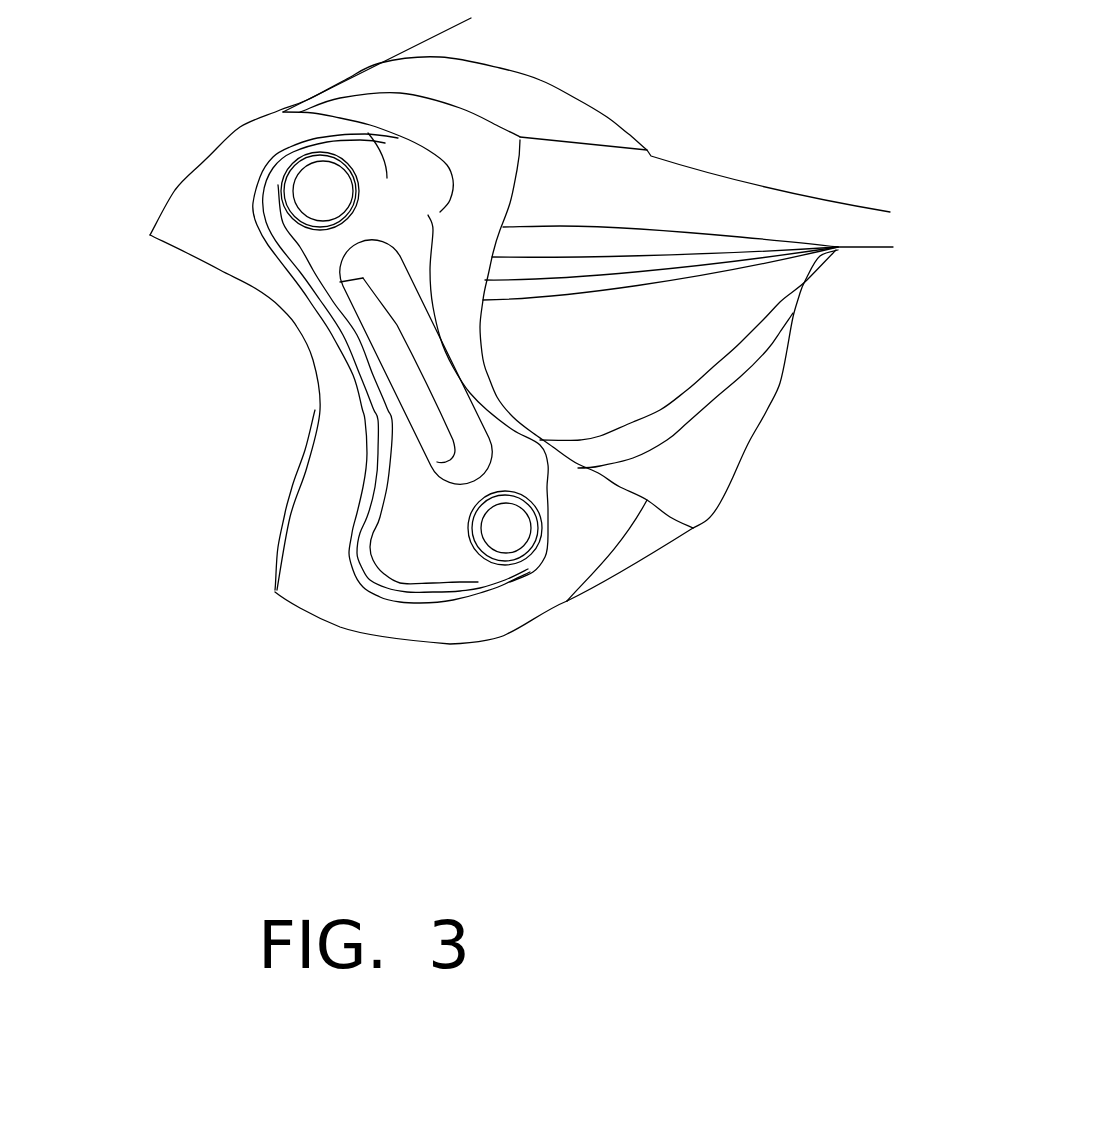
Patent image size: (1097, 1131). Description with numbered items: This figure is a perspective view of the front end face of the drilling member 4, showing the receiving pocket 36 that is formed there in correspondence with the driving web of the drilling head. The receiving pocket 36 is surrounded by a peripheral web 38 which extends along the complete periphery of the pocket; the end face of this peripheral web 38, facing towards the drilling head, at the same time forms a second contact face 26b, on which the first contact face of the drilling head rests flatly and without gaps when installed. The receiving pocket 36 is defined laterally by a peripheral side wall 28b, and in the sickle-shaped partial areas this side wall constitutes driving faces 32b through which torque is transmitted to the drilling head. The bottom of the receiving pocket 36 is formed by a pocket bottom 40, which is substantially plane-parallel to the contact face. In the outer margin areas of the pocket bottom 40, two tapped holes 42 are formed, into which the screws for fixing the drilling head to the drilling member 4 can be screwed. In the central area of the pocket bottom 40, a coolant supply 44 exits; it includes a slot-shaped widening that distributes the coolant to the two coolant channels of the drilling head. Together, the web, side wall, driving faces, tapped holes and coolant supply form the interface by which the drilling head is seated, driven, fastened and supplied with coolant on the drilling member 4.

The drilling member 4 is at (683, 543).
The second contact face 26b is at (575, 548).
The peripheral side wall 28b is at (300, 235).
The driving faces 32b is at (380, 490).
The receiving pocket 36 is at (340, 99).
The peripheral web 38 is at (352, 404).
The pocket bottom 40 is at (420, 508).
The tapped holes 42 is at (323, 189).
The coolant supply 44 is at (420, 350).